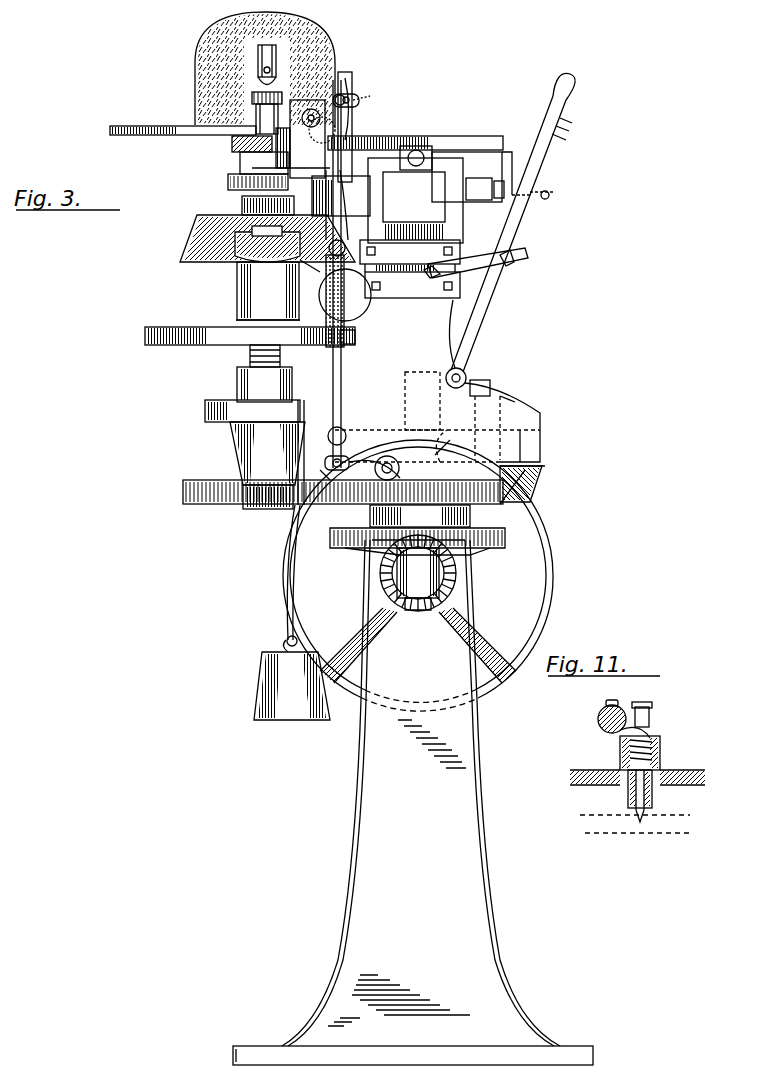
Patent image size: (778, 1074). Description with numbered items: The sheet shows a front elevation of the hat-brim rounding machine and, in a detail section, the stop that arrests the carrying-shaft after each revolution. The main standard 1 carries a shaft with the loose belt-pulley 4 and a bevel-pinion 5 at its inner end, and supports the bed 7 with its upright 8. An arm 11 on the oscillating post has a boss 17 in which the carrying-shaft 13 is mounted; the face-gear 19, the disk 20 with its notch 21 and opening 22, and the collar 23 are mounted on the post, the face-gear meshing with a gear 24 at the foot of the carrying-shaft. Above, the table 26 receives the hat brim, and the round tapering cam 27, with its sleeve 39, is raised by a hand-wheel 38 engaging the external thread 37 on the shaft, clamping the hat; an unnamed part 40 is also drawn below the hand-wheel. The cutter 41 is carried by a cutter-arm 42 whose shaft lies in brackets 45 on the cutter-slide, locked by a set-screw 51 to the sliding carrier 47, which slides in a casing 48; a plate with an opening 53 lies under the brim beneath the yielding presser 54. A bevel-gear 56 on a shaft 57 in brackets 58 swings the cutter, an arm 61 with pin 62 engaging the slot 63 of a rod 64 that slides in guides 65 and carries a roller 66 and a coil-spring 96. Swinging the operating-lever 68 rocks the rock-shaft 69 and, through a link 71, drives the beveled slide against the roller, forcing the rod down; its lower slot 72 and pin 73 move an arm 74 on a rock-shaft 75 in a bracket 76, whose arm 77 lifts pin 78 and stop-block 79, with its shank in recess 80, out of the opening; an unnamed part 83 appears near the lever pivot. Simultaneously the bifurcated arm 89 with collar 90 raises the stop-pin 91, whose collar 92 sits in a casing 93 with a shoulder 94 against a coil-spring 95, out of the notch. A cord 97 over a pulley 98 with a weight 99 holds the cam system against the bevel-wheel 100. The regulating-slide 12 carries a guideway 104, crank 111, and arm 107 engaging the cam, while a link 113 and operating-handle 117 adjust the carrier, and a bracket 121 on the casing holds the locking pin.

In FIG. 3, the main standard 1 is at (413, 802).
In FIG. 3, the loose belt-pulley 4 is at (552, 586).
In FIG. 3, the bevel-pinion 5 is at (432, 606).
In FIG. 3, the bed 7 is at (541, 437).
In FIG. 3, the upright 8 is at (405, 320).
In FIG. 3, the arm 11 is at (252, 410).
In FIG. 3, the regulating-slide 12 is at (424, 247).
In FIG. 3, the carrying-shaft 13 is at (250, 355).
In FIG. 3, the boss 17 is at (236, 464).
In FIG. 3, the face-gear 19 is at (502, 510).
In FIG. 3, the disk 20 is at (536, 485).
In FIG. 3, the notch 21 is at (355, 96).
In FIG. 3, the opening 22 is at (454, 444).
In FIG. 3, the collar 23 is at (418, 573).
In FIG. 3, the gear 24 is at (204, 504).
In FIG. 3, the table 26 is at (180, 135).
In FIG. 3, the round tapering cam 27 is at (228, 168).
In FIG. 3, the external thread 37 is at (281, 355).
In FIG. 3, the hand-wheel 38 is at (192, 327).
In FIG. 3, the sleeves 39 is at (268, 258).
In FIG. 3, the collar 40 is at (237, 380).
In FIG. 3, the cutter 41 is at (258, 50).
In FIG. 3, the cutter-arm 42 is at (262, 70).
In FIG. 3, the brackets 45 is at (252, 110).
In FIG. 3, the sliding carrier 47 is at (216, 176).
In FIG. 3, the casing 48 is at (410, 255).
In FIG. 3, the set-screw 51 is at (232, 146).
In FIG. 3, the opening 53 is at (296, 140).
In FIG. 3, the yielding presser 54 is at (282, 70).
In FIG. 3, the bevel-gear 56 is at (342, 75).
In FIG. 3, the shaft 57 is at (346, 84).
In FIG. 3, the brackets 58 is at (291, 147).
In FIG. 3, the arm 61 is at (412, 278).
In FIG. 3, the pin 62 is at (360, 101).
In FIG. 3, the slot 63 is at (352, 100).
In FIG. 3, the rod 64 is at (343, 378).
In FIG. 3, the guides 65 is at (340, 432).
In FIG. 3, the roller 66 is at (362, 310).
In FIG. 3, the operating-lever 68 is at (527, 232).
In FIG. 3, the rock-shaft 69 is at (466, 372).
In FIG. 11, the rock-shaft 69 is at (600, 719).
In FIG. 3, the link 71 is at (455, 265).
In FIG. 3, the slot 72 is at (345, 458).
In FIG. 3, the pin 73 is at (324, 474).
In FIG. 3, the arm 74 is at (375, 471).
In FIG. 3, the rock-shaft 75 is at (388, 466).
In FIG. 3, the bracket 76 is at (420, 515).
In FIG. 3, the arm 77 is at (439, 516).
In FIG. 3, the pin 78 is at (335, 550).
In FIG. 3, the stop-block 79 is at (441, 438).
In FIG. 3, the recess 80 is at (422, 401).
In FIG. 3, the stop block 83 is at (490, 388).
In FIG. 11, the bifurcated arm 89 is at (650, 718).
In FIG. 11, the collar 90 is at (602, 730).
In FIG. 3, the stop-pin 91 is at (516, 467).
In FIG. 11, the stop-pin 91 is at (650, 796).
In FIG. 11, the collar 92 is at (660, 756).
In FIG. 11, the casing 93 is at (665, 772).
In FIG. 11, the shoulder 94 is at (624, 780).
In FIG. 11, the coil-spring 95 is at (628, 748).
In FIG. 3, the coil-spring 96 is at (355, 350).
In FIG. 3, the cord 97 is at (294, 592).
In FIG. 3, the pulley 98 is at (304, 415).
In FIG. 3, the weight 99 is at (292, 678).
In FIG. 3, the bevel-wheel 100 is at (267, 238).
In FIG. 3, the guideway 104 is at (492, 152).
In FIG. 3, the arm 107 is at (355, 170).
In FIG. 3, the crank 111 is at (546, 196).
In FIG. 3, the link 113 is at (445, 148).
In FIG. 3, the operating-handle 117 is at (428, 158).
In FIG. 3, the bracket 121 is at (483, 189).